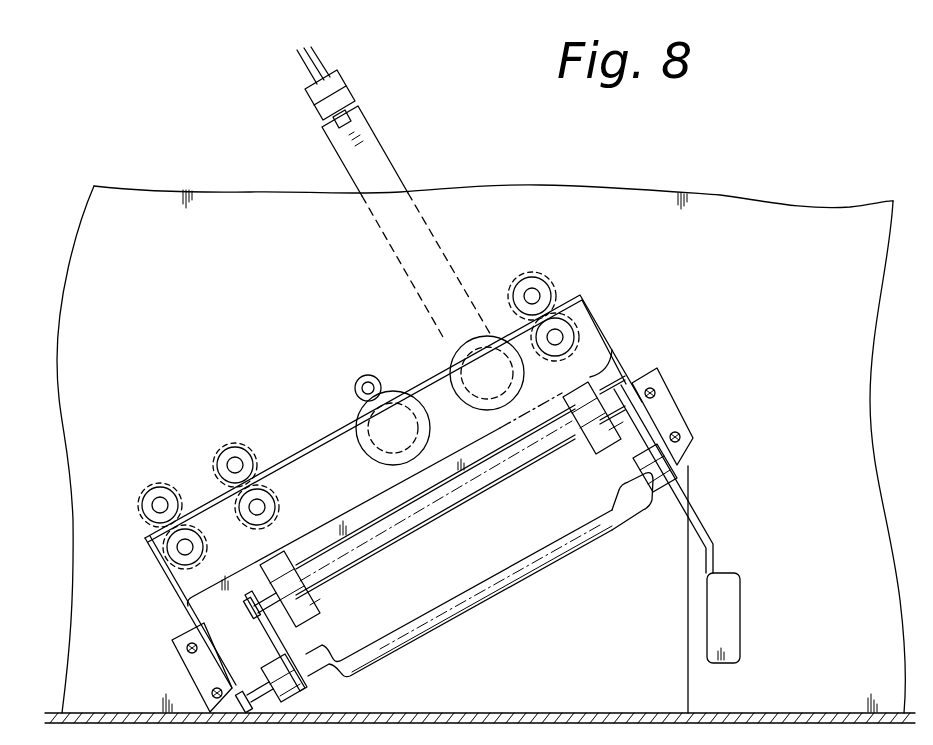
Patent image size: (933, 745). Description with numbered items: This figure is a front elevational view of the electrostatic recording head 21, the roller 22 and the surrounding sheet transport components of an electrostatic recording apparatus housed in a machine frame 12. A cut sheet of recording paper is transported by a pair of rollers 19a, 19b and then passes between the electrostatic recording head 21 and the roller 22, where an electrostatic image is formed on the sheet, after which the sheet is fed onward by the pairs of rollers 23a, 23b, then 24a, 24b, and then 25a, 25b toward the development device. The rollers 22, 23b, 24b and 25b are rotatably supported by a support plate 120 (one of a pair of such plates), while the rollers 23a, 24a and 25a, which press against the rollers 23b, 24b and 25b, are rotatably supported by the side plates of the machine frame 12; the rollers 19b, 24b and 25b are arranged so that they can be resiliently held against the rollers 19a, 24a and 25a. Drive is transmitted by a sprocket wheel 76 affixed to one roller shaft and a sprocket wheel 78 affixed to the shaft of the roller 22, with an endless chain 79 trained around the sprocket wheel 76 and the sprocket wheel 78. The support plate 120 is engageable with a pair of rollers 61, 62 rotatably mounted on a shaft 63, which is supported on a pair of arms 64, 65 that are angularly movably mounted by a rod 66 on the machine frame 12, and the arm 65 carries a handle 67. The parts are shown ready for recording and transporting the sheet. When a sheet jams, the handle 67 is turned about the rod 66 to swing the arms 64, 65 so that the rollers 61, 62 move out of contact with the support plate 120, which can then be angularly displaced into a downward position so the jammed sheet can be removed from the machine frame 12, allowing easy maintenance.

The machine frame 12 is at (607, 712).
The electrostatic recording head 21 is at (423, 231).
The support plate 120 is at (595, 351).
The roller 19a is at (540, 274).
The roller 19b is at (576, 320).
The roller 22 is at (466, 365).
The roller 23a is at (354, 388).
The roller 23b is at (356, 424).
The roller 24a is at (224, 451).
The roller 24b is at (248, 527).
The roller 25a is at (143, 492).
The roller 25b is at (143, 547).
The sprocket wheel 76 is at (347, 437).
The sprocket wheel 78 is at (439, 357).
The endless chain 79 is at (422, 458).
The roller 61 is at (318, 604).
The roller 62 is at (600, 456).
The shaft 63 is at (469, 498).
The arm 64 is at (268, 636).
The arm 65 is at (643, 424).
The rod 66 is at (531, 573).
The handle 67 is at (722, 583).